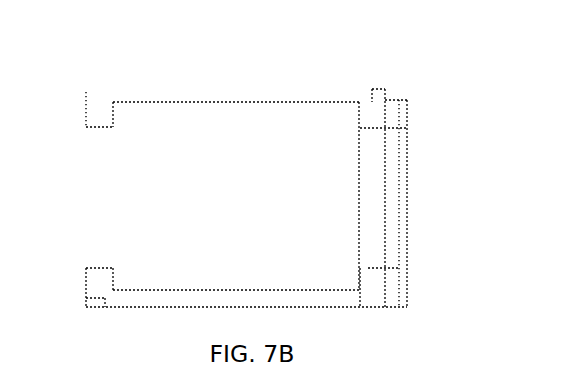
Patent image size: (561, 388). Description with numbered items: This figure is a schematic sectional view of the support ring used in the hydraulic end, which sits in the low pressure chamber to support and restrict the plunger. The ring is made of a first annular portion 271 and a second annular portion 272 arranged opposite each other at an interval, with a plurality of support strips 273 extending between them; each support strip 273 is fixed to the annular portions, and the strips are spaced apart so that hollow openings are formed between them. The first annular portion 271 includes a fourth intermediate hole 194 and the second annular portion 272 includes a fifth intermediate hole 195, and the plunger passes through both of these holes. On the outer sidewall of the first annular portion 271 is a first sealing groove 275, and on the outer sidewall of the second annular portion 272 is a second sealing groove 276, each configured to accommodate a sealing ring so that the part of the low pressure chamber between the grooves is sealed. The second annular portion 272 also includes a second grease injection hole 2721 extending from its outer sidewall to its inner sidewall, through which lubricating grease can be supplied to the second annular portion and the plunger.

The first annular portion 271 is at (93, 107).
The first sealing groove 275 is at (100, 92).
The support strip 273 is at (192, 95).
The second annular portion 272 is at (373, 107).
The second sealing groove 276 is at (377, 90).
The second grease injection hole 2721 is at (392, 102).
The fourth intermediate hole 194 is at (101, 213).
The fifth intermediate hole 195 is at (387, 220).